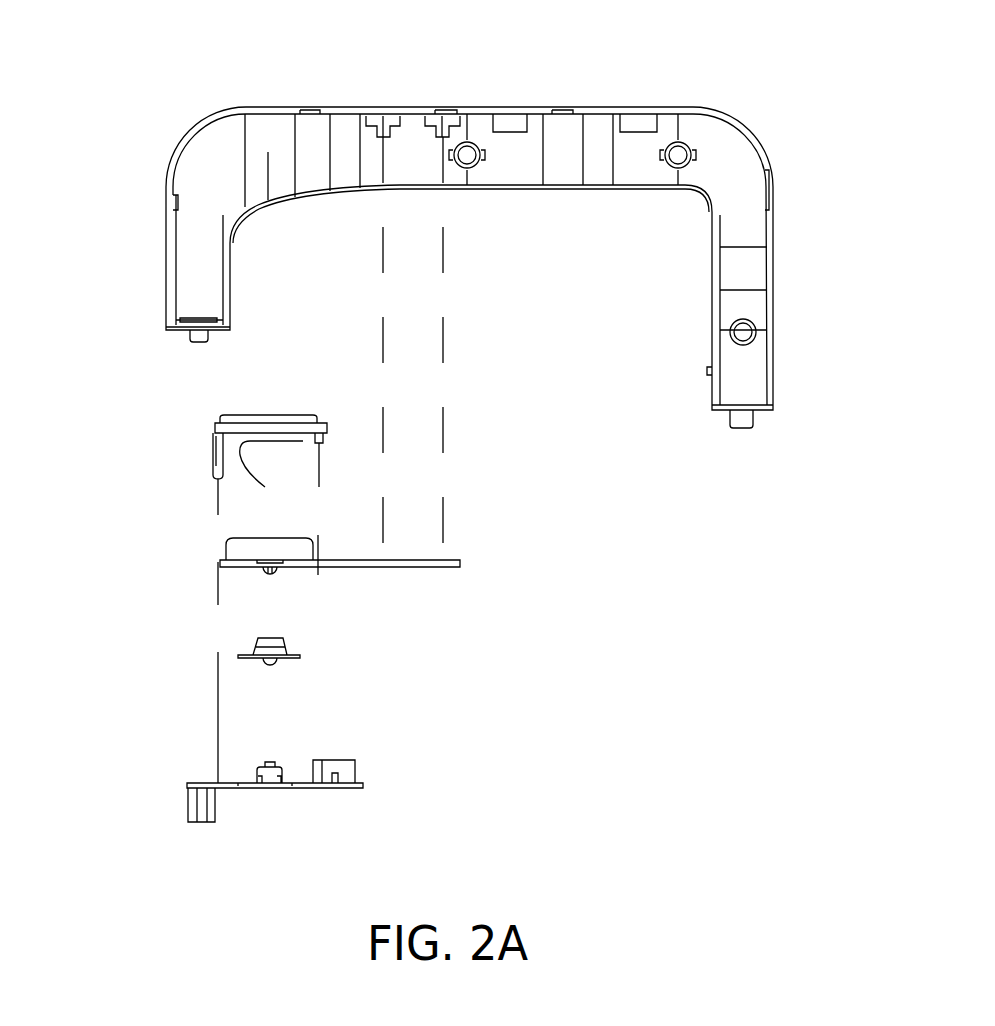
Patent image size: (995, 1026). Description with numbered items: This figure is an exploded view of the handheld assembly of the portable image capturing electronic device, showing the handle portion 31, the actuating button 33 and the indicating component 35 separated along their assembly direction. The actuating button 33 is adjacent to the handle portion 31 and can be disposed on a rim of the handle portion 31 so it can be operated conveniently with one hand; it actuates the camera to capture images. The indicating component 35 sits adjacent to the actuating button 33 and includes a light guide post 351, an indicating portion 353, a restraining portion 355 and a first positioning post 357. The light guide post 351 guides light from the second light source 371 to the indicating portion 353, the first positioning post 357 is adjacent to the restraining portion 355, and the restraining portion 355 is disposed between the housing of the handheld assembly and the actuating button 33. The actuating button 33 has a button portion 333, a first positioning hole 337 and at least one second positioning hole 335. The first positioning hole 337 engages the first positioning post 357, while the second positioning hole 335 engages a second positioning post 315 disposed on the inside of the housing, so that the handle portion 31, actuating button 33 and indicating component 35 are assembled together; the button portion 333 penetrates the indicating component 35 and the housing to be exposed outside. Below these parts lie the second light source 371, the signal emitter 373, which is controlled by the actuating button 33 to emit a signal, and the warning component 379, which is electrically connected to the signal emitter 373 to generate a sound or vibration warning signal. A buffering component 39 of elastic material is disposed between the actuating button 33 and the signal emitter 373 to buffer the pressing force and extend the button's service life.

The handle portion 31 is at (473, 112).
The second positioning post 315 is at (430, 117).
The indicating component 35 is at (95, 383).
The indicating portion 353 is at (265, 417).
The restraining portion 355 is at (245, 428).
The light guide post 351 is at (218, 465).
The first positioning post 357 is at (265, 487).
The actuating button 33 is at (628, 530).
The button portion 333 is at (297, 548).
The second positioning hole 335 is at (383, 567).
The first positioning hole 337 is at (318, 567).
The buffering component 39 is at (255, 643).
The second light source 371 is at (218, 782).
The signal emitter 373 is at (263, 763).
The warning component 379 is at (330, 765).